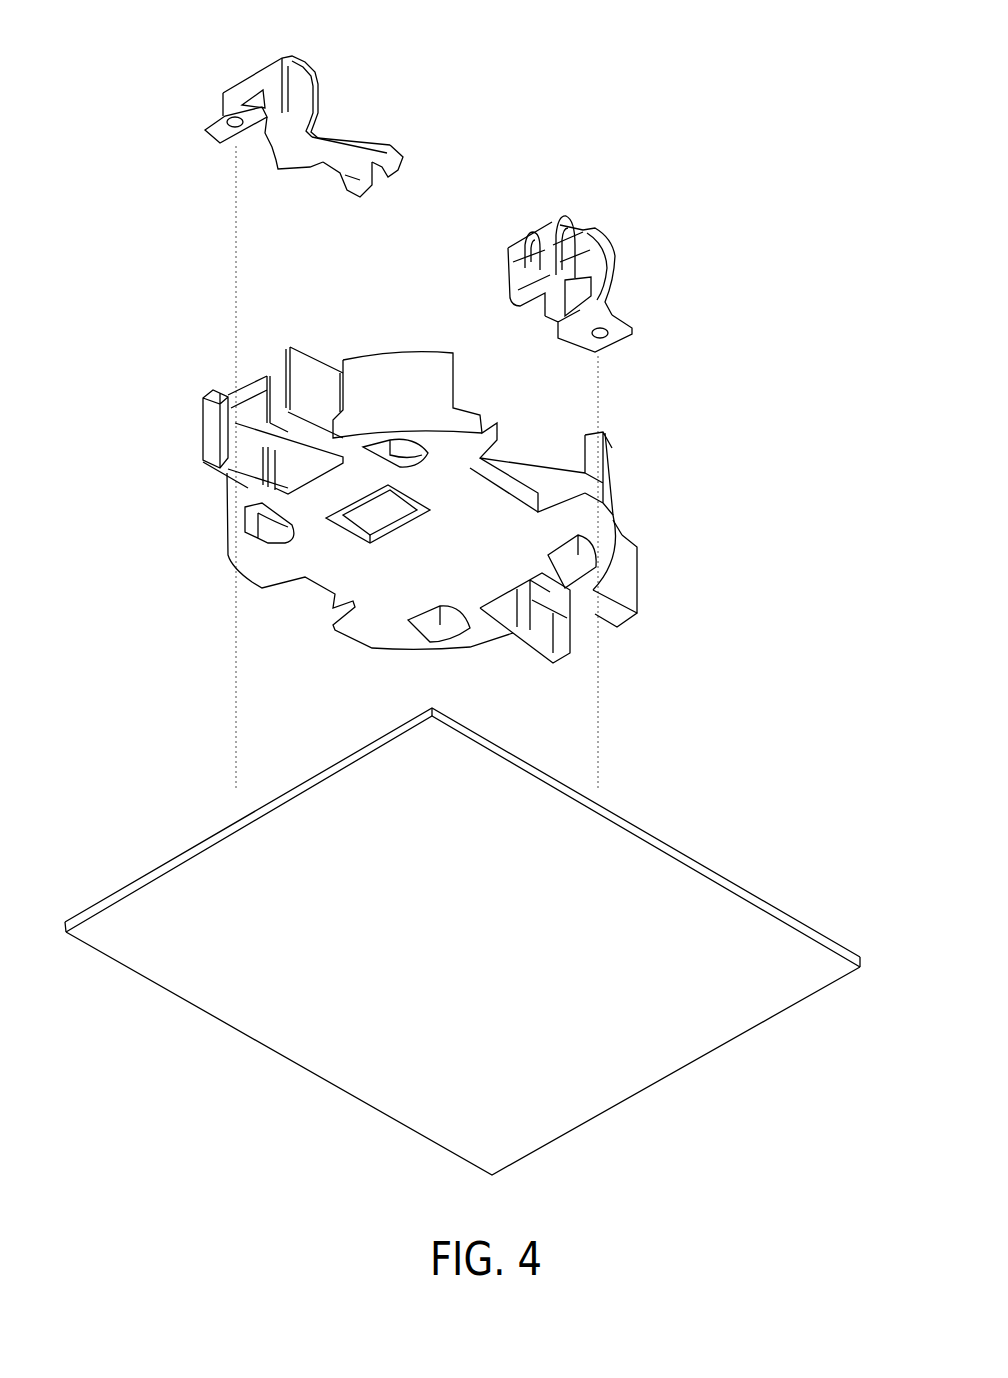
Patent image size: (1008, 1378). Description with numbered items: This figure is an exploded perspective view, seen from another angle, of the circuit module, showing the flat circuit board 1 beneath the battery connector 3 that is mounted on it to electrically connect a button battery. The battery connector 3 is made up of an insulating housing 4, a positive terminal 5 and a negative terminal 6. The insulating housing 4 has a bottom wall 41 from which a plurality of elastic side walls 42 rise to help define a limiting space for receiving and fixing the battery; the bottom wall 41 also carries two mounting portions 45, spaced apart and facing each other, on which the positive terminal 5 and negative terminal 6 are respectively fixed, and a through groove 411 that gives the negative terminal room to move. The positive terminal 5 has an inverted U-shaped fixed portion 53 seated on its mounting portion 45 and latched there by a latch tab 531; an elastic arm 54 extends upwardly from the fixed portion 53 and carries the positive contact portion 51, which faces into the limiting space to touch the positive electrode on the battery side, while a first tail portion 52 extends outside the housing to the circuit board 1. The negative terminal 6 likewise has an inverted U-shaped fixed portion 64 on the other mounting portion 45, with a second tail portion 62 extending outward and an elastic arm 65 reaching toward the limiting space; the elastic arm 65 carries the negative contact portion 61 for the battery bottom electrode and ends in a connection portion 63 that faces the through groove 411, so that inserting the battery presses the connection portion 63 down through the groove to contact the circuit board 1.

The circuit board 1 is at (683, 856).
The battery connector 3 is at (722, 326).
The insulating housing 4 is at (215, 360).
The bottom wall 41 is at (332, 562).
The through groove 411 is at (390, 522).
The elastic side wall 42 is at (392, 392).
The mounting portion 45 is at (252, 393).
The positive terminal 5 is at (615, 217).
The positive contact portion 51 is at (513, 245).
The first tail portion 52 is at (623, 337).
The fixed portion 53 is at (607, 237).
The latch tab 531 is at (555, 303).
The elastic arm 54 is at (518, 275).
The negative terminal 6 is at (330, 72).
The negative contact portion 61 is at (387, 148).
The second tail portion 62 is at (215, 140).
The connection portion 63 is at (390, 173).
The fixed portion 64 is at (300, 63).
The elastic arm 65 is at (358, 137).